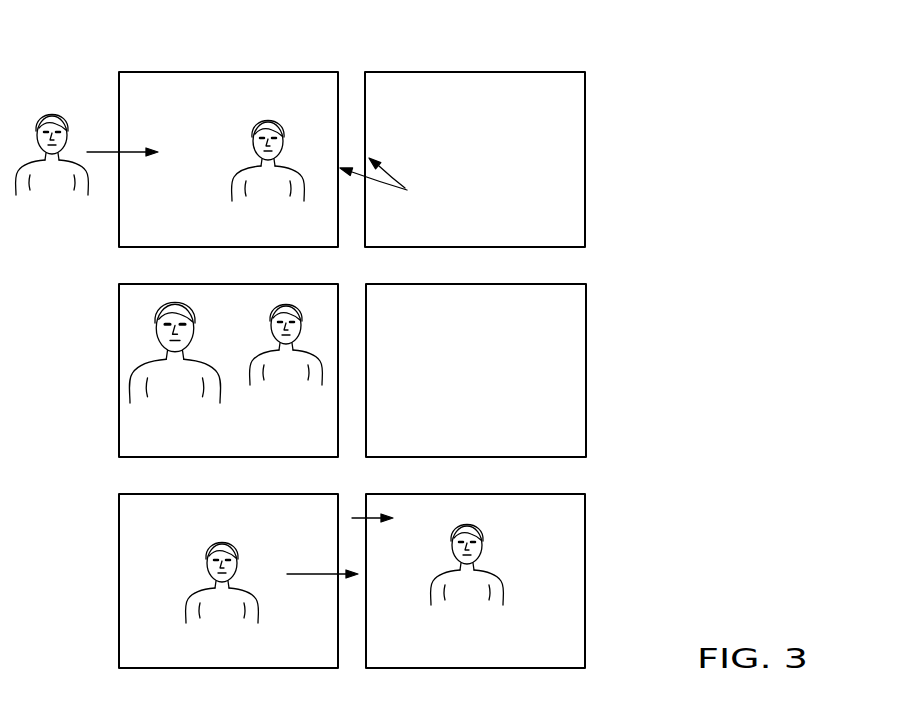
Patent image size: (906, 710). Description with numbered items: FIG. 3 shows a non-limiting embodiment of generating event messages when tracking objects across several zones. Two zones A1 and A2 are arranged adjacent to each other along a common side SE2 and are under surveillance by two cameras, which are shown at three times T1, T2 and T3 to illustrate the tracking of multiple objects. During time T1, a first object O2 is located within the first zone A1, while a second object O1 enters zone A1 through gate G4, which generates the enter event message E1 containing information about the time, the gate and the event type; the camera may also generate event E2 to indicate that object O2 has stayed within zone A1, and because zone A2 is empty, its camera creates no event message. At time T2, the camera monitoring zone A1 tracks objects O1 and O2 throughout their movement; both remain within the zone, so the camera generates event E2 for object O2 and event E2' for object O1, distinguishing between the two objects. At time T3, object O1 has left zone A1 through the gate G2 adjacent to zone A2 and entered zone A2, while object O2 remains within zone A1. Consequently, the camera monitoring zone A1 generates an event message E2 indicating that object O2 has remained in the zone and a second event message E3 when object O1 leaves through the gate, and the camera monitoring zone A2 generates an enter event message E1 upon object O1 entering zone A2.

The first zone A1 is at (217, 72).
The second zone A2 is at (483, 72).
The gate G2 is at (336, 125).
The gate G4 is at (118, 88).
The enter event message E1 is at (105, 150).
The event message E2 is at (196, 399).
The event message E2' is at (167, 412).
The leave event message E3 is at (317, 575).
The object O1 is at (52, 172).
The first object O2 is at (253, 124).
The common side SE2 is at (399, 182).
The first time T1 is at (612, 84).
The second time T2 is at (612, 306).
The third time T3 is at (612, 512).